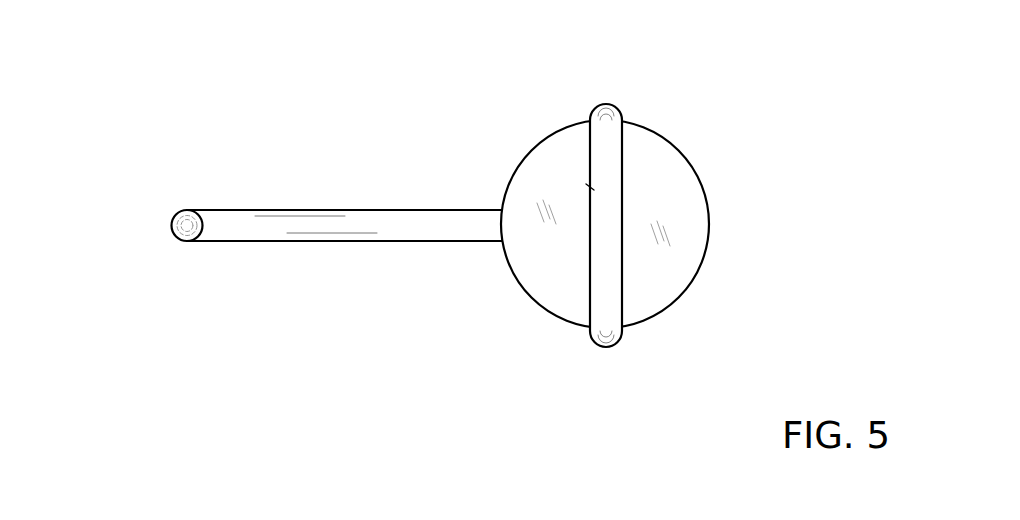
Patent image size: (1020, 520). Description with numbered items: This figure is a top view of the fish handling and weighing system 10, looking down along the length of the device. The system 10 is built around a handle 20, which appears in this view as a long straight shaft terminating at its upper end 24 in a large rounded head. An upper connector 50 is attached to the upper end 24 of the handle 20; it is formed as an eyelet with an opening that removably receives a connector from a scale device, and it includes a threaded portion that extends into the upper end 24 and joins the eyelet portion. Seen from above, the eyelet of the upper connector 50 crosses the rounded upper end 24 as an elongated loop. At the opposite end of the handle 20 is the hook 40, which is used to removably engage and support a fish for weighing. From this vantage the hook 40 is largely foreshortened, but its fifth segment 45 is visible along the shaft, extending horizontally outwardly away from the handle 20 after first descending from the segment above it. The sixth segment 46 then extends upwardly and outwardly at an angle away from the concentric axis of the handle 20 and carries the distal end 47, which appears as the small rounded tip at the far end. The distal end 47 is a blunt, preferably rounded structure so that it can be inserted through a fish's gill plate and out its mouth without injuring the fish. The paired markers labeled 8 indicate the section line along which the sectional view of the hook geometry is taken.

The fish handling and weighing system 10 is at (134, 82).
The handle 20 is at (590, 118).
The upper end 24 is at (662, 170).
The hook 40 is at (337, 217).
The fifth segment 45 is at (320, 227).
The sixth segment 46 is at (202, 222).
The distal end 47 is at (188, 220).
The upper connector 50 is at (590, 187).
The section line 8- 8 is at (107, 227).